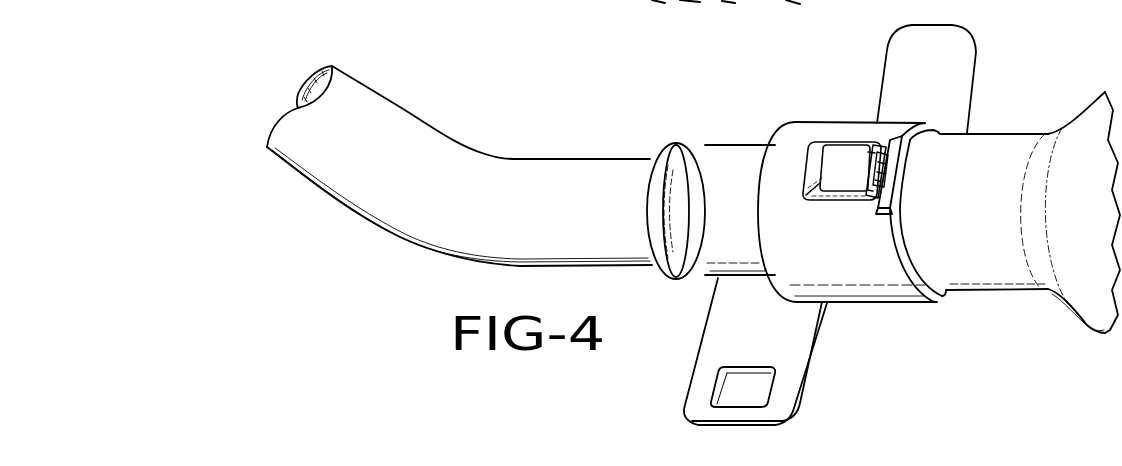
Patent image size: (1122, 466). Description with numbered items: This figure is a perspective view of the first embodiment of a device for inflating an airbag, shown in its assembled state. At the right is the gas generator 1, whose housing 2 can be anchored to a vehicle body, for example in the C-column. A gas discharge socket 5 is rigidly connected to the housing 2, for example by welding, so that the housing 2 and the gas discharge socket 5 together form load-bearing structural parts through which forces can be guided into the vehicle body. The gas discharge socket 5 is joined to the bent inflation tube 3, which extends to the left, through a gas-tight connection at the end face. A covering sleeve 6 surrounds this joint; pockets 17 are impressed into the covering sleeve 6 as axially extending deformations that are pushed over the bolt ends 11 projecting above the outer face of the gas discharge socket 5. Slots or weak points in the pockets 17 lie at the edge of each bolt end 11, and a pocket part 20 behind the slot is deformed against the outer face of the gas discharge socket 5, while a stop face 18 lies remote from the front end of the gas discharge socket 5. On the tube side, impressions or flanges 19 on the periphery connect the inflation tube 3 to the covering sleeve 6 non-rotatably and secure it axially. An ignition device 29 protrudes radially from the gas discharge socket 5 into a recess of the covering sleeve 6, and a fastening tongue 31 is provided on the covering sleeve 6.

The gas generator 1 is at (1058, 313).
The housing 2 is at (1082, 100).
The inflation tube 3 is at (429, 228).
The gas discharge socket 5 is at (962, 277).
The covering sleeve 6 is at (745, 155).
The bolt ends 11 is at (878, 180).
The pockets 17 is at (842, 165).
The stop face 18 is at (880, 170).
The impressions or flanges 19 is at (684, 165).
The pocket part 20 is at (903, 163).
The ignition device 29 is at (958, 50).
The fastening tongue 31 is at (715, 348).